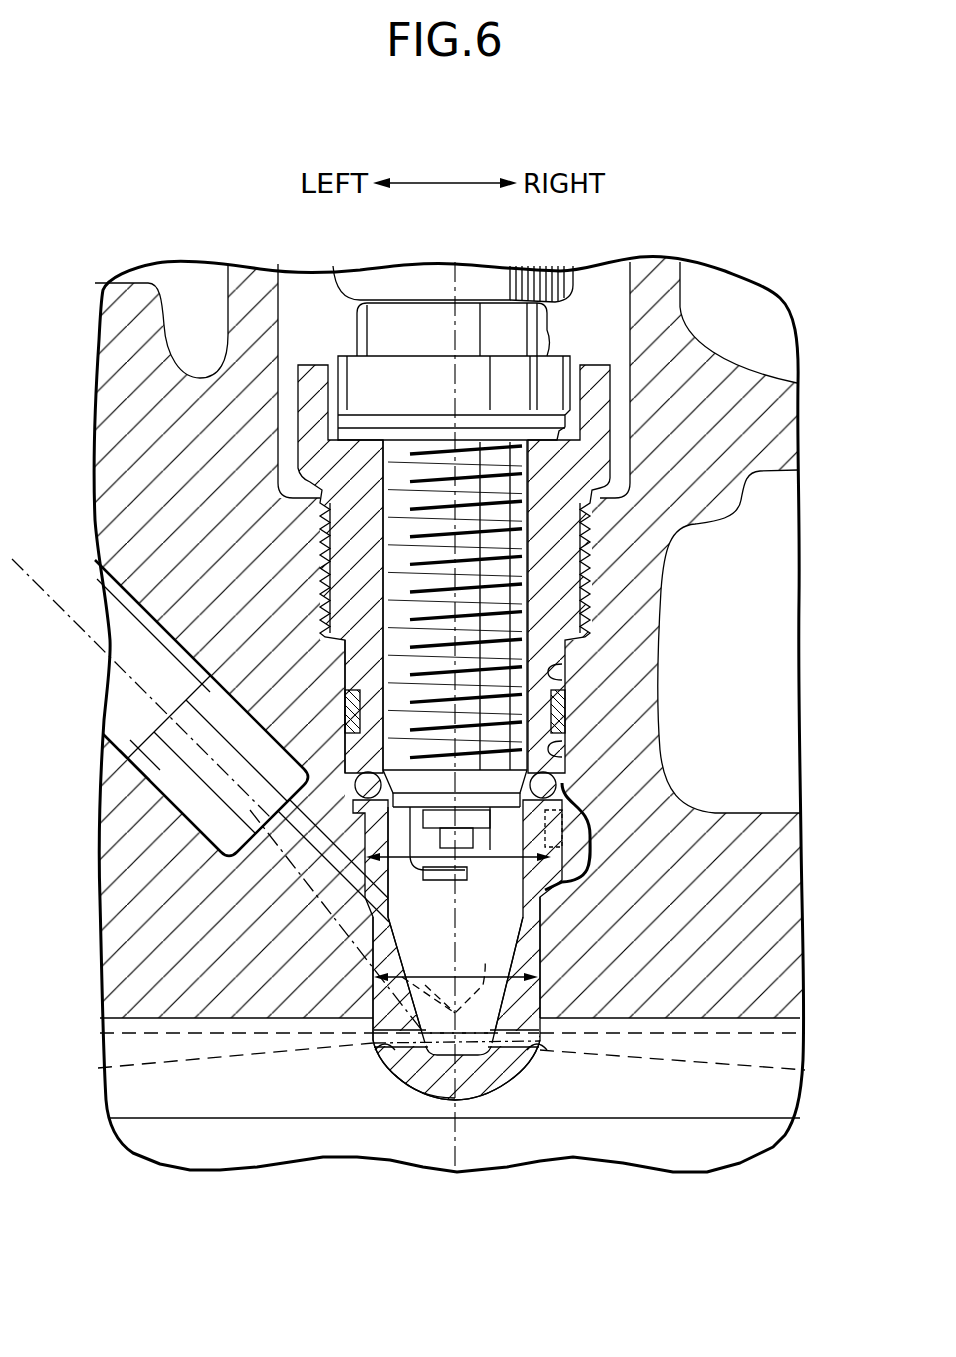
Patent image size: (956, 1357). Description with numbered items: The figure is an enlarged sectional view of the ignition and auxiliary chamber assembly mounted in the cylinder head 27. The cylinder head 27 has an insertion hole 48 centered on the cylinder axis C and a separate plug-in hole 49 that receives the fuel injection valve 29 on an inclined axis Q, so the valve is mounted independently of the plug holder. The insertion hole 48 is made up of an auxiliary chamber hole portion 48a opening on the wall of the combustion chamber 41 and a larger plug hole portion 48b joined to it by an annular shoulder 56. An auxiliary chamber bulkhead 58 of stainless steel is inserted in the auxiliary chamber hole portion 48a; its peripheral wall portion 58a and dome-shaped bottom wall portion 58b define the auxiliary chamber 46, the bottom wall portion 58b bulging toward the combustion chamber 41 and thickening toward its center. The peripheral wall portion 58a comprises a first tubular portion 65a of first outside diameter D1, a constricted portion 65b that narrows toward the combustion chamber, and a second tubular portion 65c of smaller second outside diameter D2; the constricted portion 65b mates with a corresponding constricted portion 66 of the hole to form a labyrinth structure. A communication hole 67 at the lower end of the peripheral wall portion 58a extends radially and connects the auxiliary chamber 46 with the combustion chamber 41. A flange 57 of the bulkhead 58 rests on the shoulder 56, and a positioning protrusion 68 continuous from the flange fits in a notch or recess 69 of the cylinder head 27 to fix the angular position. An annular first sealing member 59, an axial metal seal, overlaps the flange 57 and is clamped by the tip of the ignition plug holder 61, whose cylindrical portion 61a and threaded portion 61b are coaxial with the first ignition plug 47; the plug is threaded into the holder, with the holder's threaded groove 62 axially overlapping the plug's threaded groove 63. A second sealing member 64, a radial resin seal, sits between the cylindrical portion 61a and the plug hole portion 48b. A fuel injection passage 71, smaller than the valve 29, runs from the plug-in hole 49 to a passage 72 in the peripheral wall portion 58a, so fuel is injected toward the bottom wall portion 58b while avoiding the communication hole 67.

The cylinder head 27 is at (772, 893).
The fuel injection valve 29 is at (142, 640).
The combustion chamber 41 is at (648, 1020).
The auxiliary chamber 46 is at (518, 912).
The first ignition plug 47 is at (545, 330).
The insertion hole 48 is at (561, 672).
The auxiliary chamber hole portion 48a is at (532, 950).
The plug hole portion 48b is at (561, 752).
The plug-in hole 49 is at (208, 700).
The annular shoulder 56 is at (350, 792).
The flange 57 is at (347, 735).
The auxiliary chamber bulkhead 58 is at (543, 1010).
The peripheral wall portion 58a is at (374, 1003).
The bottom wall portion 58b is at (428, 1088).
The first sealing member 59 is at (553, 790).
The ignition plug holder 61 is at (615, 436).
The cylindrical portion 61a is at (343, 667).
The threaded portion 61b is at (350, 587).
The threaded groove 62 is at (283, 538).
The threaded groove 63 is at (578, 545).
The second sealing member 64 is at (563, 706).
The first tubular portion 65a is at (380, 878).
The constricted portion 65b is at (368, 916).
The second tubular portion 65c is at (368, 948).
The constricted portion 66 is at (388, 908).
The communication hole 67 is at (382, 1048).
The positioning protrusion 68 is at (568, 872).
The notch or recess 69 is at (560, 838).
The fuel injection passage 71 is at (282, 868).
The passage 72 is at (405, 1068).
The cylinder axis C is at (456, 1143).
The first outside diameter D1 is at (458, 889).
The second outside diameter D2 is at (456, 953).
The axis of the fuel injection valve Q is at (447, 973).